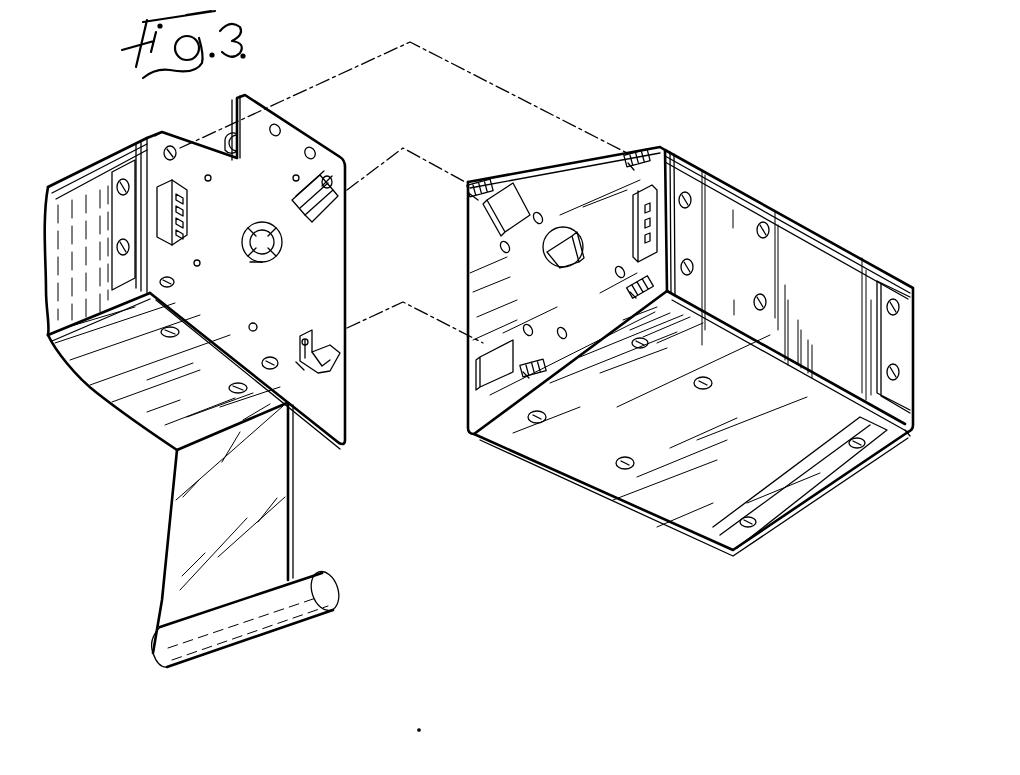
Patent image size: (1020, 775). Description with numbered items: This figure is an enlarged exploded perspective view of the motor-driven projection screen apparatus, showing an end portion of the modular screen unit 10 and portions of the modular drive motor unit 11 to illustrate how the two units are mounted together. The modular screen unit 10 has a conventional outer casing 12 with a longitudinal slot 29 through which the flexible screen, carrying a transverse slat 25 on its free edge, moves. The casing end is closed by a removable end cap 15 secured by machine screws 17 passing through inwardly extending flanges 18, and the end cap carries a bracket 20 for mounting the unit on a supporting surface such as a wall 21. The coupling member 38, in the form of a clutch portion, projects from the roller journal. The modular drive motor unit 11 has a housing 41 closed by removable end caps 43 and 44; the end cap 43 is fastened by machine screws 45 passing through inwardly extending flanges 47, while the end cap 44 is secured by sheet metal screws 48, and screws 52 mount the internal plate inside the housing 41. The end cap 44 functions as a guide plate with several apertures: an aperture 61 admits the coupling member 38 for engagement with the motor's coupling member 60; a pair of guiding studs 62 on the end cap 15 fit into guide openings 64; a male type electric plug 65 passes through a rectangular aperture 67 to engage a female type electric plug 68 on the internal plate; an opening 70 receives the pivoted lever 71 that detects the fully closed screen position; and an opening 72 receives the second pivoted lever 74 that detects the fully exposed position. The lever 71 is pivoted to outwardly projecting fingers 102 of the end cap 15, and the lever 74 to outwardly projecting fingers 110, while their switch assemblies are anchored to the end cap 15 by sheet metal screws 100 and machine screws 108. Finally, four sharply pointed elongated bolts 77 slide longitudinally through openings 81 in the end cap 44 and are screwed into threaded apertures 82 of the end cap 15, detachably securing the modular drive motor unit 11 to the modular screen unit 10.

The modular screen unit 10 is at (90, 166).
The modular drive motor unit 11 is at (758, 186).
The outer casing 12 is at (130, 400).
The end cap 15 is at (331, 430).
The machine screws 17 is at (117, 188).
The inwardly extending flanges 18 is at (111, 226).
The bracket 20 is at (225, 135).
The wall 21 is at (272, 520).
The slat 25 is at (300, 612).
The longitudinal slot 29 is at (290, 438).
The coupling member 38 is at (240, 262).
The housing 41 is at (657, 500).
The end cap 43 is at (907, 436).
The end cap 44 is at (530, 168).
The machine screws 45 is at (893, 307).
The inwardly extending flanges 47 is at (904, 318).
The sheet metal screws 48 is at (692, 268).
The screws 52 is at (768, 235).
The coupling member 60 is at (576, 240).
The aperture 61 is at (546, 251).
The guiding studs 62 is at (211, 179).
The guide openings 64 is at (612, 190).
The male type electric plug 65 is at (190, 206).
The rectangular aperture 67 is at (632, 233).
The female type electric plug 68 is at (656, 231).
The opening 70 is at (479, 375).
The pivoted lever 71 is at (303, 367).
The opening 72 is at (487, 212).
The pivoted lever 74 is at (328, 178).
The elongated bolts 77 is at (630, 154).
The openings 81 is at (652, 150).
The threaded apertures 82 is at (170, 150).
The sheet metal screws 100 is at (254, 324).
The outwardly projecting fingers 102 is at (305, 333).
The machine screws 108 is at (300, 250).
The outwardly projecting fingers 110 is at (300, 178).